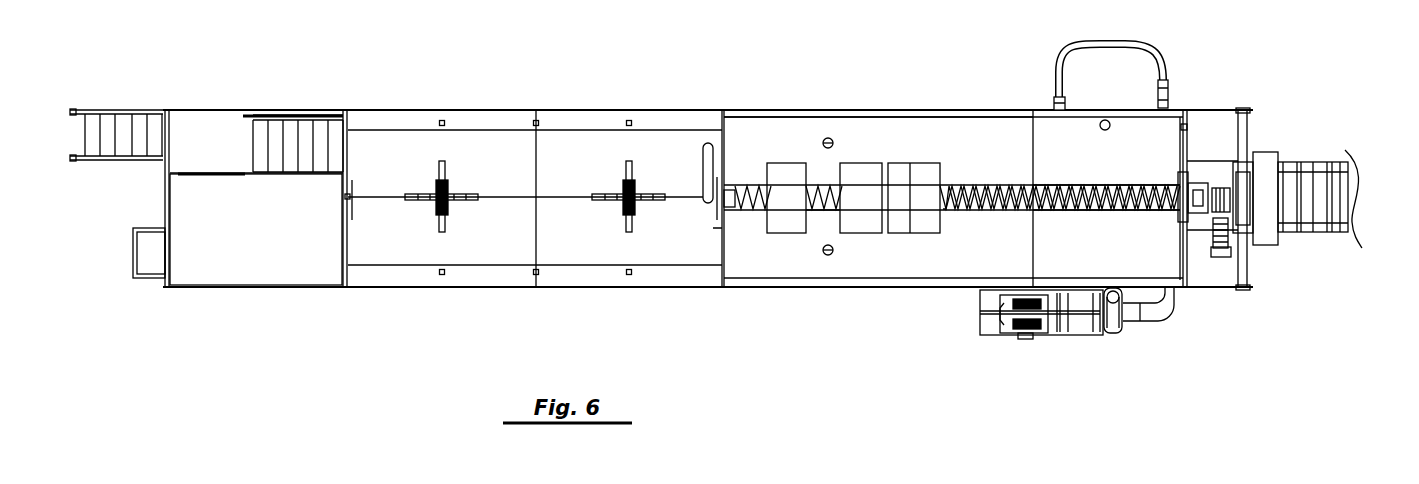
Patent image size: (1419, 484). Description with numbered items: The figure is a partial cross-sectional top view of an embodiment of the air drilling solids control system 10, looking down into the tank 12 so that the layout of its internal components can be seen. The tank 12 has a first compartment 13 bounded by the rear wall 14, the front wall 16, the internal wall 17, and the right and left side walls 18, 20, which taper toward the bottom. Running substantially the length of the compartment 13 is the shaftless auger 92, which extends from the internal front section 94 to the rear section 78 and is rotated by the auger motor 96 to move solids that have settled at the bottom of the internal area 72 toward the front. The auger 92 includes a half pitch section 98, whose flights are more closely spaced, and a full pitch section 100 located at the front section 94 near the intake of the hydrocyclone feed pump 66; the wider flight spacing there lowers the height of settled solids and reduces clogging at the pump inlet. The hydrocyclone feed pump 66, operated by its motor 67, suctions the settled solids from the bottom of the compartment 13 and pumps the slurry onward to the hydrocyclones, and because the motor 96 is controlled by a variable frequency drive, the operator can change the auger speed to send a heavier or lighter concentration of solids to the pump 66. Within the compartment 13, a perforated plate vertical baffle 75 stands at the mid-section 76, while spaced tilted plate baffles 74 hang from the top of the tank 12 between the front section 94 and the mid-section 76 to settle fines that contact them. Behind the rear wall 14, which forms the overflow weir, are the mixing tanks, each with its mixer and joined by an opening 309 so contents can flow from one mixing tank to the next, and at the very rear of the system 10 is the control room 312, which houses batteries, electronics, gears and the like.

The air drilling solids control system 10 is at (257, 75).
The tank 12 is at (908, 143).
The first compartment 13 is at (983, 132).
The rear wall 14 is at (723, 247).
The front wall 16 is at (1183, 150).
The internal wall 17 is at (873, 268).
The right side wall 18 is at (985, 270).
The left side wall 20 is at (806, 126).
The hydrocyclone feed pump 66 is at (1112, 332).
The motor 67 is at (1038, 334).
The internal area 72 is at (1047, 183).
The tilted plate baffles 74 is at (897, 175).
The plate vertical baffle 75 is at (1035, 258).
The mid-section 76 is at (957, 183).
The rear section 78 is at (753, 185).
The shaftless auger 92 is at (985, 180).
The internal front section 94 is at (1138, 183).
The auger motor 96 is at (1220, 255).
The half pitch section 98 is at (815, 208).
The full pitch section 100 is at (1132, 212).
The opening 309 is at (533, 163).
The control room 312 is at (242, 250).